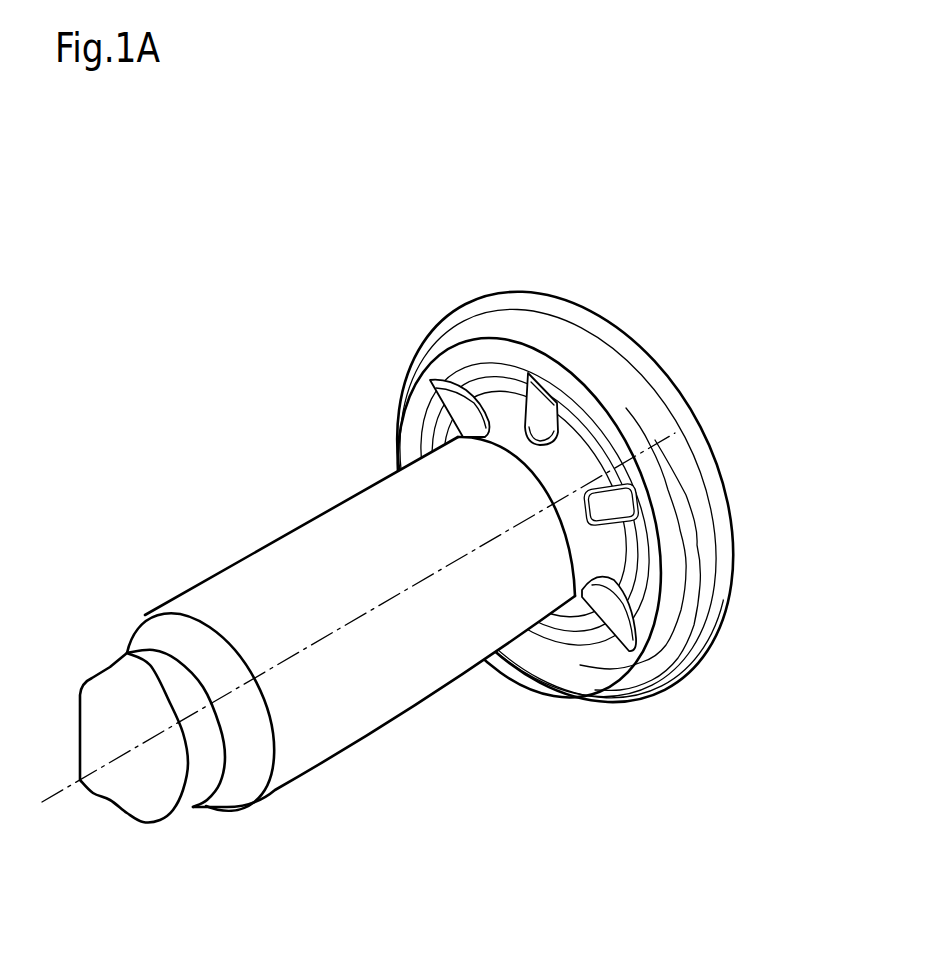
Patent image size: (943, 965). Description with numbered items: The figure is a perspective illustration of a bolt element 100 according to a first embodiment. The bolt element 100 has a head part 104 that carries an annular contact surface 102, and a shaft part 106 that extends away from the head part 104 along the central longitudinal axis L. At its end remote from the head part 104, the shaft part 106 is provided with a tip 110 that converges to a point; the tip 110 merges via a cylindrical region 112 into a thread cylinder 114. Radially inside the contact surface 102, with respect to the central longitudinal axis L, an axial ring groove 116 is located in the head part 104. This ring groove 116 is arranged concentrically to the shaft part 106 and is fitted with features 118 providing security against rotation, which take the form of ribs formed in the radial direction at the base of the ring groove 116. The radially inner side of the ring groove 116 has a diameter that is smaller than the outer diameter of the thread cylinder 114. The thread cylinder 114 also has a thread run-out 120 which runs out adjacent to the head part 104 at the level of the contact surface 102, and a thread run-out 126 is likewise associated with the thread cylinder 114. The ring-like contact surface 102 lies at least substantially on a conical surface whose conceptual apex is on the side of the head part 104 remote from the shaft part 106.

The bolt element 100 is at (196, 378).
The annular contact surface 102 is at (424, 339).
The head part 104 is at (530, 345).
The shaft part 106 is at (204, 537).
The tip 110 is at (98, 713).
The cylindrical region 112 is at (153, 677).
The thread cylinder 114 is at (297, 743).
The axial ring groove 116 is at (583, 427).
The features providing security against rotation 118 is at (538, 413).
The thread run-out 120 is at (417, 417).
The thread run-out 126 is at (578, 553).
The central longitudinal axis L is at (60, 797).